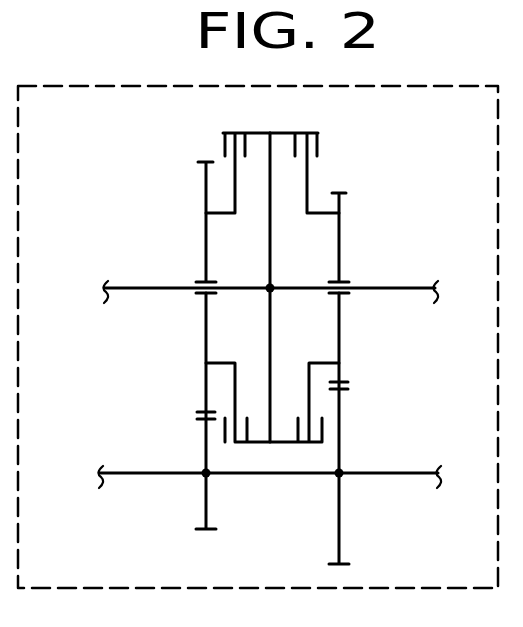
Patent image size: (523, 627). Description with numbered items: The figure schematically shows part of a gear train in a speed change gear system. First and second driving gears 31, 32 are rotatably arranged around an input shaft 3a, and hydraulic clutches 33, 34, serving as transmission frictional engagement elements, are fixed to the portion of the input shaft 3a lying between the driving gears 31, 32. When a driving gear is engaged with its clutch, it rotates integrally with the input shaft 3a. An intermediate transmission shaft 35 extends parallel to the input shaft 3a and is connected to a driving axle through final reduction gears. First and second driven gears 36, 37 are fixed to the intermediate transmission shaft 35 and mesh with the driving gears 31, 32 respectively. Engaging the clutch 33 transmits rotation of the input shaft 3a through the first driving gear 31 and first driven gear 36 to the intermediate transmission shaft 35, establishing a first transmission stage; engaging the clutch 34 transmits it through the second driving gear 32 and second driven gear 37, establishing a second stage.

The first driving gear 31 is at (340, 220).
The second driving gear 32 is at (205, 203).
The hydraulic clutch 33 is at (307, 132).
The hydraulic clutch 34 is at (234, 132).
The intermediate transmission shaft 35 is at (154, 474).
The first driven gear 36 is at (341, 516).
The second driven gear 37 is at (208, 512).
The input shaft 3a is at (162, 289).